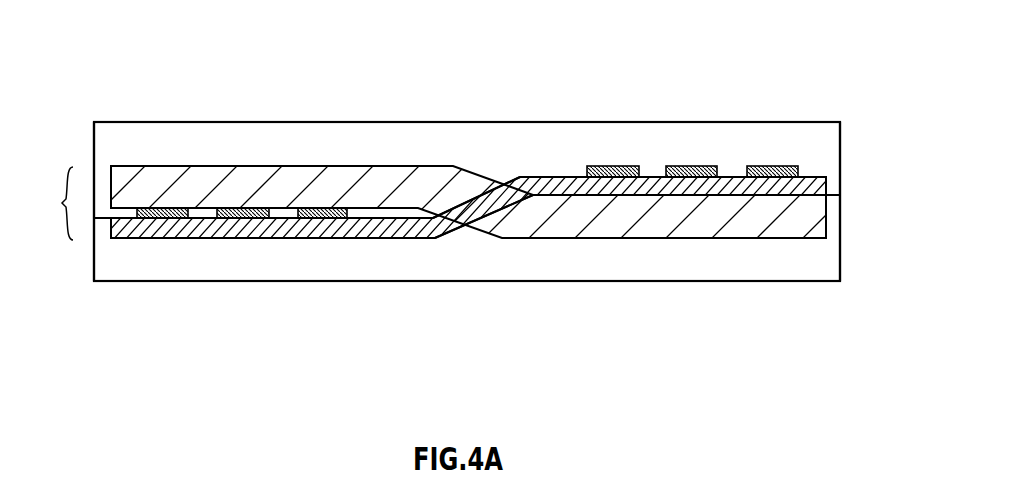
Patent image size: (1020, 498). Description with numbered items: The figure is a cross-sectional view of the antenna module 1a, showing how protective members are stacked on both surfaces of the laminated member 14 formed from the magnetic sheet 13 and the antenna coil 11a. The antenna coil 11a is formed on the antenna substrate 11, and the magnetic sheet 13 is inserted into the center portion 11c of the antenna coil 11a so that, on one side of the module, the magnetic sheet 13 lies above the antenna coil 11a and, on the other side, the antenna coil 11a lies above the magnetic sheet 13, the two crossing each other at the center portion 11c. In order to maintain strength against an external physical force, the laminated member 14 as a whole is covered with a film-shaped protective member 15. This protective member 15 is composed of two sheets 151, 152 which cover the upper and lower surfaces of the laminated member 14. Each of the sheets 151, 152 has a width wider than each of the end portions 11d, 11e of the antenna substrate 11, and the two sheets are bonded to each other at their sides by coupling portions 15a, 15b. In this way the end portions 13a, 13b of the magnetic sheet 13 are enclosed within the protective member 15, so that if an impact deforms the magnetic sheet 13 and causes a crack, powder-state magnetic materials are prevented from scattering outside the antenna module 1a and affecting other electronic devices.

The antenna module 1a is at (593, 28).
The antenna substrate 11 is at (817, 183).
The antenna coil 11a is at (685, 166).
The center portion 11c is at (472, 195).
The end portion of the antenna 11d is at (108, 228).
The end portion of the antenna 11e is at (826, 185).
The magnetic sheet 13 is at (277, 180).
The end portion of the magnetic sheet 13a is at (110, 190).
The end portion of the magnetic sheet 13b is at (827, 238).
The laminated member 14 is at (54, 203).
The protective member 15 is at (467, 202).
The sheet 151 is at (632, 122).
The sheet 152 is at (632, 281).
The coupling portion 15a is at (93, 220).
The coupling portion 15b is at (841, 196).